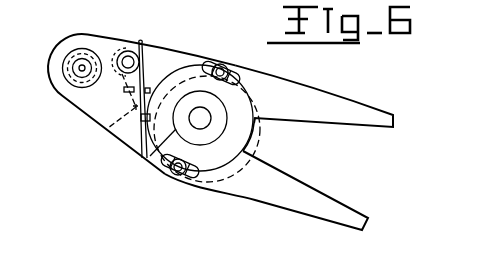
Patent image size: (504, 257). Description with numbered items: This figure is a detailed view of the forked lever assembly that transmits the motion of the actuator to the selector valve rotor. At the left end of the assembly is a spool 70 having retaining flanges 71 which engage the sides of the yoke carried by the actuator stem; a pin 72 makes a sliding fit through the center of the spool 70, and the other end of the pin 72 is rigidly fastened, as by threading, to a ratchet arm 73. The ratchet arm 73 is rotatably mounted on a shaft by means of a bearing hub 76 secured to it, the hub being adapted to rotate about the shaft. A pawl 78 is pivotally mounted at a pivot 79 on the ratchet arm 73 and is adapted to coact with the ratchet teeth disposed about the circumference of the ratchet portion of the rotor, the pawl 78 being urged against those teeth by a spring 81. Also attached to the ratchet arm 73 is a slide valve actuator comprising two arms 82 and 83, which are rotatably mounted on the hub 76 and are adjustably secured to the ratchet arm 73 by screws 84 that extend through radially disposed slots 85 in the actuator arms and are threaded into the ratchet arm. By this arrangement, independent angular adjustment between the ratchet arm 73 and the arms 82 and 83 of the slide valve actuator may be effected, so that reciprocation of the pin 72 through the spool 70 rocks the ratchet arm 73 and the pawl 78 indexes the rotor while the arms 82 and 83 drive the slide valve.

The spool 70 is at (72, 53).
The retaining flanges 71 is at (62, 67).
The pin 72 is at (80, 71).
The ratchet arm 73 is at (80, 114).
The bearing hub 76 is at (150, 156).
The pawl 78 is at (108, 128).
The pawl pivot 79 is at (124, 51).
The spring 81 is at (143, 42).
The arm of slide valve actuator 82 is at (353, 102).
The arm of slide valve actuator 83 is at (268, 199).
The screws 84 is at (222, 65).
The radially disposed slots 85 is at (208, 63).